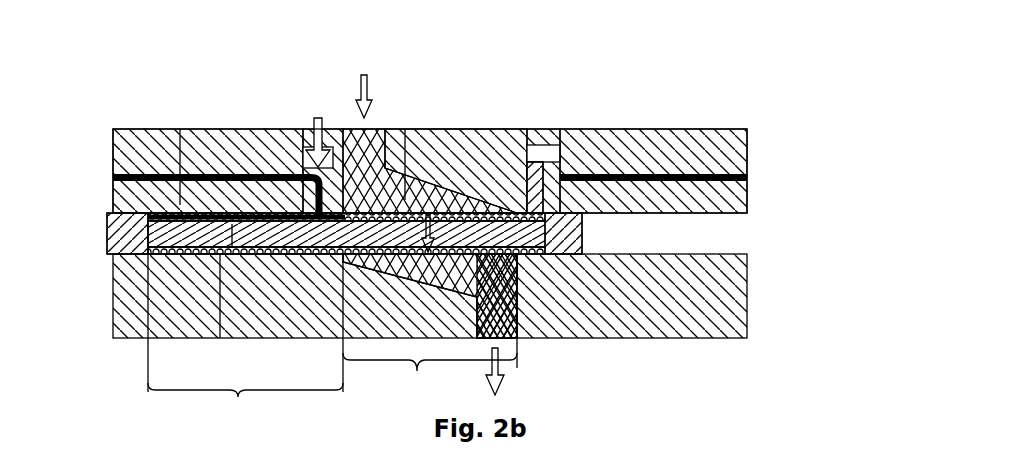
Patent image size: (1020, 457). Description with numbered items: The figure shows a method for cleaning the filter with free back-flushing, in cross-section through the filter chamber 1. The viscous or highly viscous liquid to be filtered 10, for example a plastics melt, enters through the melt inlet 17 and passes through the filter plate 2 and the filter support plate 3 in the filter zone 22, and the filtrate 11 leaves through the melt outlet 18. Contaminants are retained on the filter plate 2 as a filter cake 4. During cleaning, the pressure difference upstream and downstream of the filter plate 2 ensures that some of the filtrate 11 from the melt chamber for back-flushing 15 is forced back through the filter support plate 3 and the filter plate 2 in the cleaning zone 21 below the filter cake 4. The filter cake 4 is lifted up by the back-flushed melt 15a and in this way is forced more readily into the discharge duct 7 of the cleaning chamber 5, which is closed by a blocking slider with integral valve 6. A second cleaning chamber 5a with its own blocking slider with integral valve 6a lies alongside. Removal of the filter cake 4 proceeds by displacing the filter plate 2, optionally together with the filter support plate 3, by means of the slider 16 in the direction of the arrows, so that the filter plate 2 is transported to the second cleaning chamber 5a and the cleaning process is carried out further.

The filter chamber 1 is at (122, 318).
The filter plate 2 is at (132, 308).
The filter support plate 3 is at (158, 264).
The contaminants (filter cake) 4 is at (180, 129).
The cleaning chamber 5 is at (207, 129).
The second cleaning chamber 5a is at (652, 137).
The blocking slider with integral valve 6 is at (304, 129).
The blocking slider with integral valve 6a is at (543, 147).
The discharge duct in the cleaning chamber 7 is at (143, 175).
The viscous or highly viscous liquid to be filtered 10 is at (430, 213).
The filtrate of the viscous or highly viscous liquid 11 is at (550, 342).
The melt chamber for back-flushing 15 is at (218, 301).
The back-flushed melt 15a is at (245, 215).
The slider for moving the filter or the filter support plate 16 is at (582, 230).
The melt inlet 17 is at (430, 126).
The melt outlet 18 is at (511, 373).
The cleaning zone 21 is at (245, 407).
The filter zone 22 is at (430, 380).